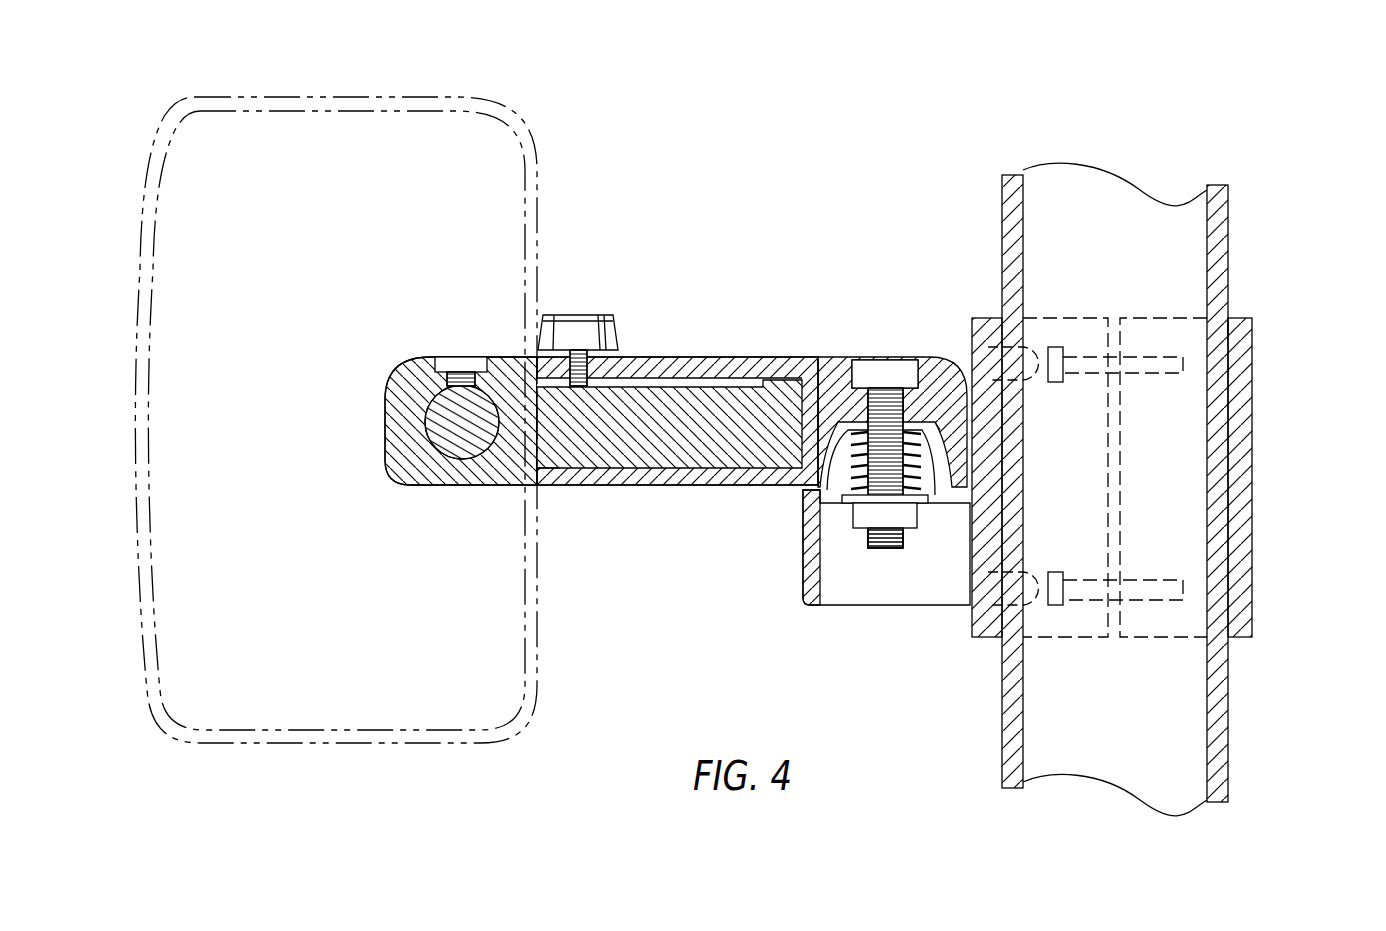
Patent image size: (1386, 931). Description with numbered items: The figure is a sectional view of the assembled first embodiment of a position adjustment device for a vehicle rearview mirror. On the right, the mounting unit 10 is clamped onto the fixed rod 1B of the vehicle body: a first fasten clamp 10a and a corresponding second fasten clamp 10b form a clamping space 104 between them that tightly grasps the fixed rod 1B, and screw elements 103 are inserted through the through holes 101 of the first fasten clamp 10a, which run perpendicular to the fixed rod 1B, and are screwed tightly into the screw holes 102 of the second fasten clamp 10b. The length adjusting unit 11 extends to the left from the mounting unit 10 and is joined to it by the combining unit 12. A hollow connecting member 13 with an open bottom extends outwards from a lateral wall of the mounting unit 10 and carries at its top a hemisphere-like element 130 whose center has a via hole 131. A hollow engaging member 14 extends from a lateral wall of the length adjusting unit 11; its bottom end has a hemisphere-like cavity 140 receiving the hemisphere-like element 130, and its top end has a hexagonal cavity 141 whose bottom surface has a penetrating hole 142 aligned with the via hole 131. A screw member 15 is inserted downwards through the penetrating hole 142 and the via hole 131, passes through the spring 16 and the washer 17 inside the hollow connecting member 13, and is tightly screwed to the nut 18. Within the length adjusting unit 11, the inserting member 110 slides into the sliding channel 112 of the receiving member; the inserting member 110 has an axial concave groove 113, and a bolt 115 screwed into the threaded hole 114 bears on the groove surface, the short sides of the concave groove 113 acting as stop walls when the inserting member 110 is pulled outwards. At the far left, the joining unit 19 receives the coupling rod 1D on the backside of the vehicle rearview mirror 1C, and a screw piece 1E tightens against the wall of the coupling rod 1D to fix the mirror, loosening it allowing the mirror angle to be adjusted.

The fixed rod 1B is at (1217, 243).
The vehicle rearview mirror 1C is at (443, 148).
The coupling rod 1D is at (462, 428).
The screw piece 1E is at (462, 365).
The mounting unit 10 is at (1163, 502).
The first fasten clamp 10a is at (990, 620).
The second fasten clamp 10b is at (1235, 432).
The through holes 101 is at (997, 373).
The screw holes 102 is at (1153, 377).
The screw elements 103 is at (1093, 590).
The clamping space 104 is at (1228, 338).
The length adjusting unit 11 is at (682, 480).
The inserting member 110 is at (632, 440).
The sliding channel 112 is at (565, 466).
The concave groove 113 is at (747, 385).
The threaded hole 114 is at (578, 352).
The bolt 115 is at (575, 332).
The combining unit 12 is at (832, 453).
The hollow connecting member 13 is at (813, 560).
The hemisphere-like element 130 is at (822, 447).
The via hole 131 is at (850, 432).
The hollow engaging member 14 is at (818, 375).
The hemisphere-like cavity 140 is at (928, 422).
The hexagonal cavity 141 is at (906, 400).
The penetrating hole 142 is at (864, 400).
The screw member 15 is at (890, 375).
The spring 16 is at (920, 500).
The washer 17 is at (908, 500).
The nut 18 is at (857, 520).
The joining unit 19 is at (601, 441).